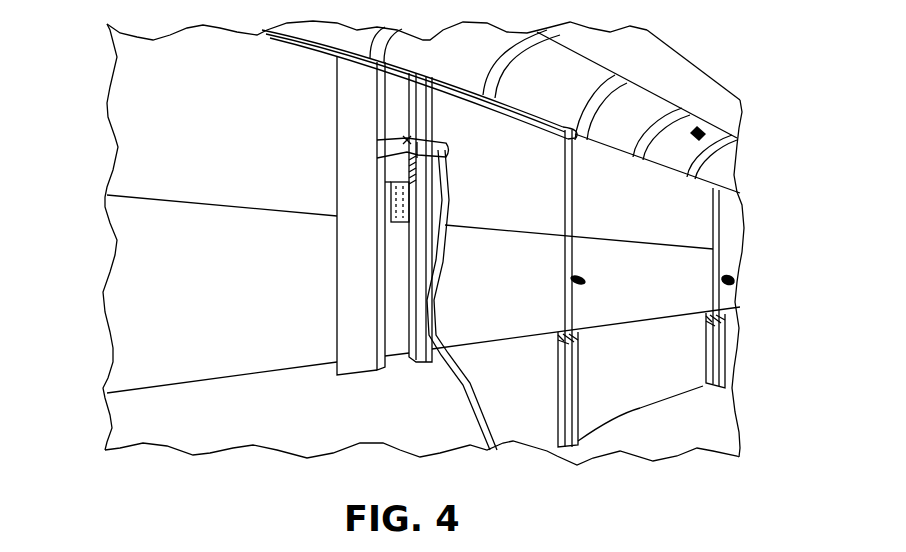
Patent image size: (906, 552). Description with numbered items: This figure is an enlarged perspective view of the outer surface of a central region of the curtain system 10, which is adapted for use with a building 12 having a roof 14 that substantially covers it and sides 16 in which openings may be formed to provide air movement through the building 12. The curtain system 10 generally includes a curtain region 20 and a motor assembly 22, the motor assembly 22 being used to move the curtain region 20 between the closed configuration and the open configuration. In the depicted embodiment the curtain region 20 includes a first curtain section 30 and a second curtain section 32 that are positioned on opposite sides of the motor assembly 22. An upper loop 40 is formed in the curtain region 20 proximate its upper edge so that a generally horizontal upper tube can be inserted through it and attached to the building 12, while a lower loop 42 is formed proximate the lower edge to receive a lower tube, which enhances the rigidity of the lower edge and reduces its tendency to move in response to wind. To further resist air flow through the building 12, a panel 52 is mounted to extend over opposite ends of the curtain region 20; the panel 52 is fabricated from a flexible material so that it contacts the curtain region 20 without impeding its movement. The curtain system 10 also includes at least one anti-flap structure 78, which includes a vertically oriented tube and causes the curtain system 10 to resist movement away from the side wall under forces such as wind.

The curtain system 10 is at (143, 246).
The building 12 is at (742, 112).
The roof 14 is at (434, 58).
The sides 16 is at (636, 383).
The curtain region 20 is at (240, 370).
The motor assembly 22 is at (396, 150).
The first curtain section 30 is at (133, 140).
The second curtain section 32 is at (727, 260).
The upper loop 40 is at (733, 202).
The lower loop 42 is at (123, 365).
The panel 52 is at (378, 366).
The anti-flap structure 78 is at (576, 280).